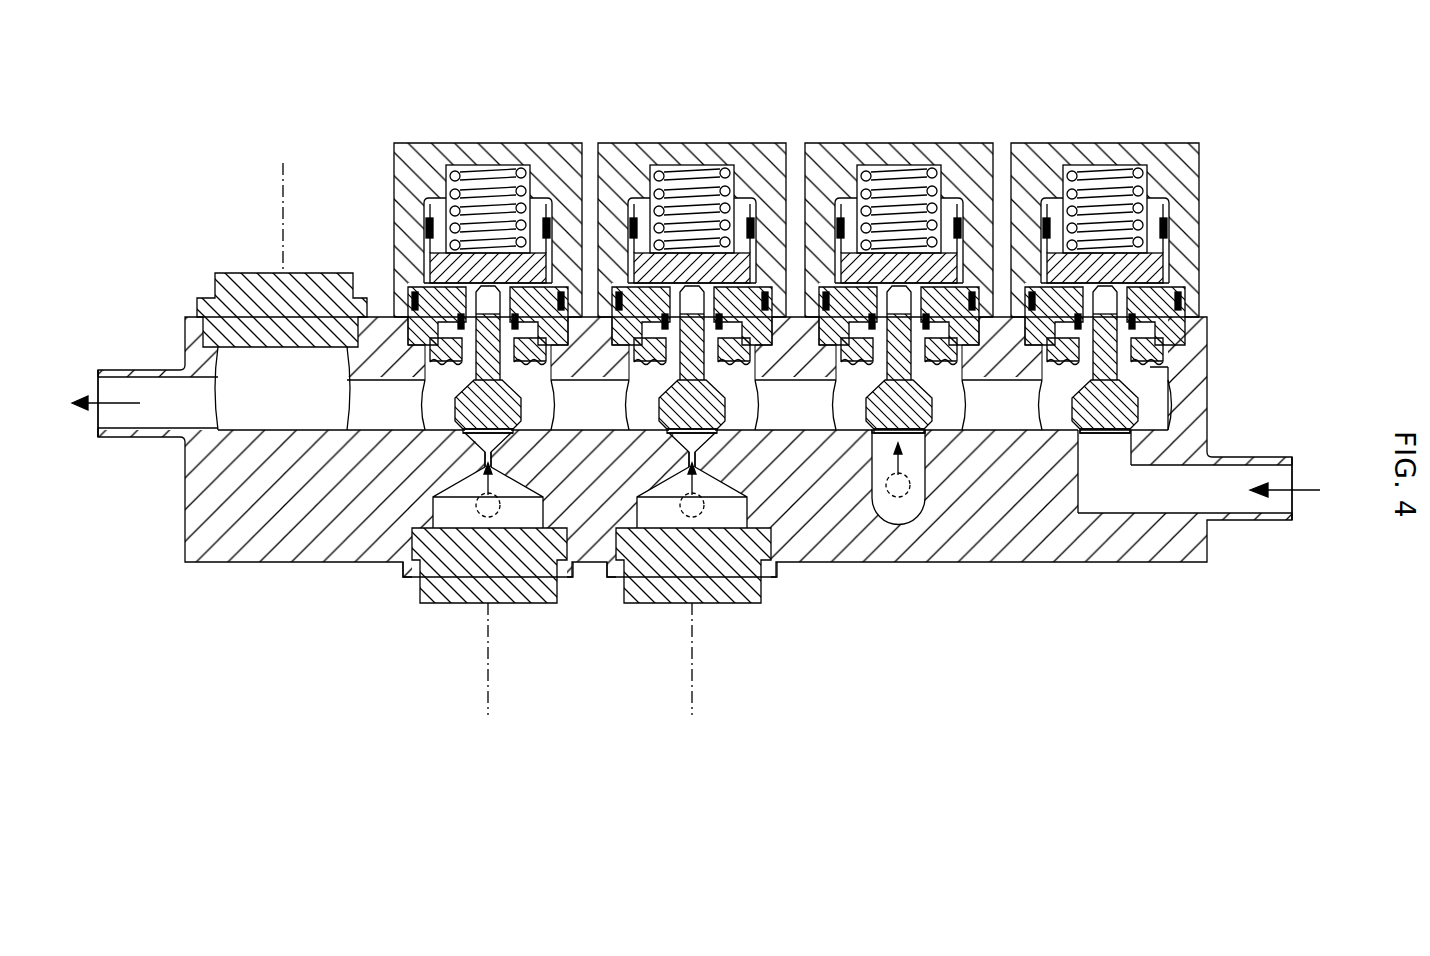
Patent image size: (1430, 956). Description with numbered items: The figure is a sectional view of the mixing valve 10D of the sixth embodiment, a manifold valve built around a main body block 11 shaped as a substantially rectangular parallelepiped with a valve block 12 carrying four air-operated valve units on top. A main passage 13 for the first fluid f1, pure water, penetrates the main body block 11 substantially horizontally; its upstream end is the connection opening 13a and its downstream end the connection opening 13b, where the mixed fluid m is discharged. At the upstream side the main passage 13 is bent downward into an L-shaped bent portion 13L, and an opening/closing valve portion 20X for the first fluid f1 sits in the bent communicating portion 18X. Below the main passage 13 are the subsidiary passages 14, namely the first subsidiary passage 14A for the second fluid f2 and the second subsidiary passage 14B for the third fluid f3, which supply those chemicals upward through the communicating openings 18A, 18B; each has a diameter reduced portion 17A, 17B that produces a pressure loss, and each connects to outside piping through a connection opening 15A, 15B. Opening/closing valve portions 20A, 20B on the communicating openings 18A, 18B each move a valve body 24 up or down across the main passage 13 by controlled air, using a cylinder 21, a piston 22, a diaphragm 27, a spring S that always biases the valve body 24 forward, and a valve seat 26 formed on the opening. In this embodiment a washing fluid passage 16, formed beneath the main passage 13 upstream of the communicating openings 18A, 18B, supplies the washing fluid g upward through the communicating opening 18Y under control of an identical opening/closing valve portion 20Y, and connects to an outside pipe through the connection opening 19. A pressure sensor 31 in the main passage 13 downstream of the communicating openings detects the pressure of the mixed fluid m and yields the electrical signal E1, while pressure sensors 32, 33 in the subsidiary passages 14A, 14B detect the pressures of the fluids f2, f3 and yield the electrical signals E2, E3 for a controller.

The mixing valve 10D is at (1210, 170).
The main body block 11 is at (185, 522).
The valve block 12 is at (420, 150).
The main passage 13 is at (143, 388).
The connection opening 13a is at (1293, 510).
The connection opening 13b is at (100, 440).
The bent portion 13L is at (1105, 500).
The subsidiary passages 14 is at (470, 472).
The first subsidiary passage 14A is at (735, 544).
The second subsidiary passage 14B is at (449, 542).
The connection opening 15A is at (722, 580).
The connection opening 15B is at (520, 580).
The washing fluid passage 16 is at (893, 515).
The diameter reduced portion 17A is at (668, 580).
The diameter reduced portion 17B is at (470, 575).
The communicating opening 18A is at (660, 462).
The communicating opening 18B is at (440, 455).
The bent communicating portion 18X is at (1107, 445).
The communicating opening 18Y is at (945, 472).
The connection opening 19 is at (936, 470).
The opening/closing valve portion 20A is at (660, 391).
The opening/closing valve portion 20B is at (455, 393).
The opening/closing valve portion 20X is at (1130, 389).
The opening/closing valve portion 20Y is at (930, 391).
The cylinder 21 is at (425, 237).
The piston 22 is at (548, 214).
The valve body 24 is at (452, 400).
The valve seat 26 is at (462, 437).
The diaphragm 27 is at (412, 290).
The pressure sensor 31 is at (228, 273).
The pressure sensor 32 is at (660, 600).
The pressure sensor 33 is at (430, 600).
The spring S is at (490, 170).
The mixed fluid m is at (101, 398).
The washing fluid g is at (906, 540).
The first fluid f1 is at (1298, 488).
The second fluid f2 is at (752, 605).
The third fluid f3 is at (545, 605).
The electrical signal E1 is at (283, 168).
The electrical signal E2 is at (692, 703).
The electrical signal E3 is at (488, 706).